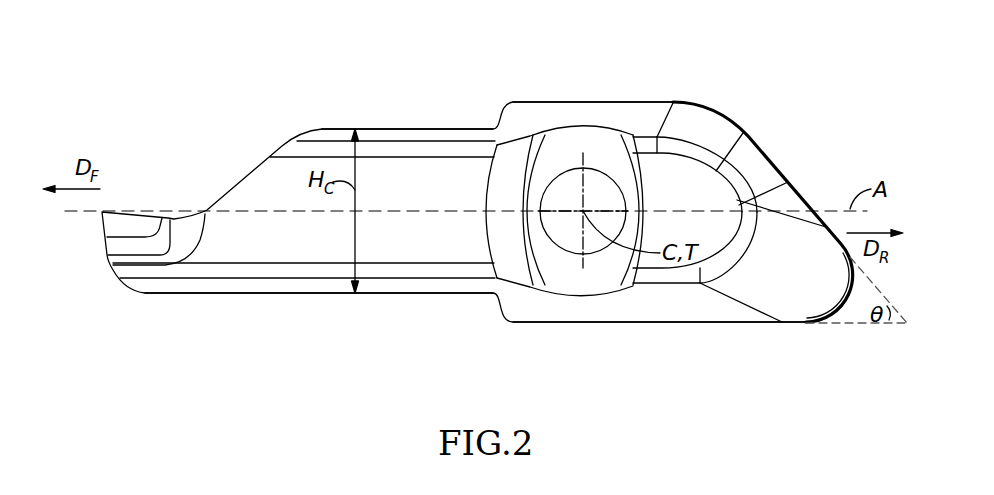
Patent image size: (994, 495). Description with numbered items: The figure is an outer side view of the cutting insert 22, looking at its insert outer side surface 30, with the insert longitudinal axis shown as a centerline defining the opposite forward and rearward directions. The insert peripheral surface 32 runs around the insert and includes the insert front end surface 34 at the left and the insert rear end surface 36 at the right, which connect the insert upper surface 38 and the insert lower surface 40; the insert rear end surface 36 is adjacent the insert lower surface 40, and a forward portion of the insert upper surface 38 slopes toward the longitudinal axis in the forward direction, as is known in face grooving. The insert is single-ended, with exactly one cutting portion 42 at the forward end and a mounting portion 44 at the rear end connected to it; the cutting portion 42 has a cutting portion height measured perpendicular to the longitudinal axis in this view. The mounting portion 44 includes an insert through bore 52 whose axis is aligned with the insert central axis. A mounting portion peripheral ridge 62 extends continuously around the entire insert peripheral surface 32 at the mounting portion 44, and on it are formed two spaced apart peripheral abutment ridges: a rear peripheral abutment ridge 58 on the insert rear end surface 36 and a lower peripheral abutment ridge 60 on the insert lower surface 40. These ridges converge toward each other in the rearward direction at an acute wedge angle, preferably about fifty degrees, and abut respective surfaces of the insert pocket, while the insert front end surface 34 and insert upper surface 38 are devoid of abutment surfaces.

The cutting insert 22 is at (690, 68).
The insert outer side surface 30 is at (382, 175).
The insert peripheral surface 32 is at (547, 100).
The insert front end surface 34 is at (102, 232).
The insert rear end surface 36 is at (784, 172).
The insert upper surface 38 is at (593, 100).
The insert lower surface 40 is at (694, 325).
The cutting portion 42 is at (245, 328).
The mounting portion 44 is at (665, 352).
The insert through bore 52 is at (622, 198).
The rear peripheral abutment ridge 58 is at (798, 193).
The lower peripheral abutment ridge 60 is at (609, 325).
The mounting portion peripheral ridge 62 is at (718, 112).